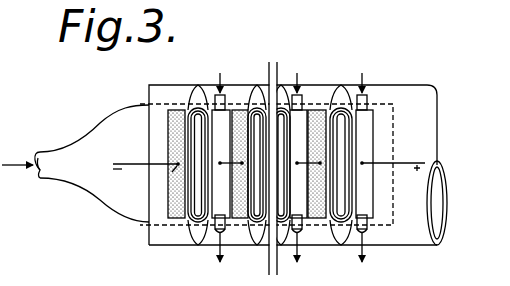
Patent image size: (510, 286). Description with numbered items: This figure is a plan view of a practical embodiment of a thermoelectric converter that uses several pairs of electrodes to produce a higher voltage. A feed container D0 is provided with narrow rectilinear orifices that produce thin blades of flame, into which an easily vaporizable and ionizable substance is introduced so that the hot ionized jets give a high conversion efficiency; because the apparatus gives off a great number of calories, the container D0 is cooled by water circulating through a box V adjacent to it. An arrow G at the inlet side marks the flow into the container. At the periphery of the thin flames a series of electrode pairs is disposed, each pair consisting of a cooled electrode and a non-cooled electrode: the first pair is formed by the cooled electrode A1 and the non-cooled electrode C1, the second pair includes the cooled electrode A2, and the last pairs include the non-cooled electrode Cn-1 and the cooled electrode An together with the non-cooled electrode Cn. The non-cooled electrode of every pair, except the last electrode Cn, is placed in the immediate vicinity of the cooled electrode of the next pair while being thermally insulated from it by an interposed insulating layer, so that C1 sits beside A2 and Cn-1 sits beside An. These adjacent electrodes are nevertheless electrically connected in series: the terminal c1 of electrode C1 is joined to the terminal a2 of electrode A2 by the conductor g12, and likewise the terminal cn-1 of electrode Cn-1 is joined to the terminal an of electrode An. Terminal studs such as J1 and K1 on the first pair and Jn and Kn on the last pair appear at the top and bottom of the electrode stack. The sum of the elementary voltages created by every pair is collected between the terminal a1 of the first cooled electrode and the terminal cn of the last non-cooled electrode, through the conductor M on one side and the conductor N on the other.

The box V is at (186, 85).
The feed container D0 is at (110, 118).
The gas flow G is at (17, 156).
The conductor N is at (146, 158).
The conductor M is at (393, 160).
The non-cooled electrode of the last pair Cn is at (178, 205).
The terminal of Cn cn is at (177, 166).
The grid element n Kn is at (218, 231).
The cooled electrode of the last pair An is at (220, 207).
The terminal n Jn is at (218, 92).
The terminal of An an is at (220, 163).
The terminal of Cn-1 cn-1 is at (243, 185).
The non-cooled electrode Cn-1 is at (250, 130).
The cooled electrode of the second pair A2 is at (294, 207).
The terminal of A2 a2 is at (297, 163).
The terminal of C1 c1 is at (320, 185).
The non-cooled electrode of the first pair C1 is at (322, 140).
The gap between stages 1 and 2 g12 is at (340, 107).
The cooled electrode of the first pair A1 is at (365, 130).
The terminal 1 J1 is at (363, 95).
The terminal K1 is at (365, 231).
The terminal of A1 a1 is at (362, 163).